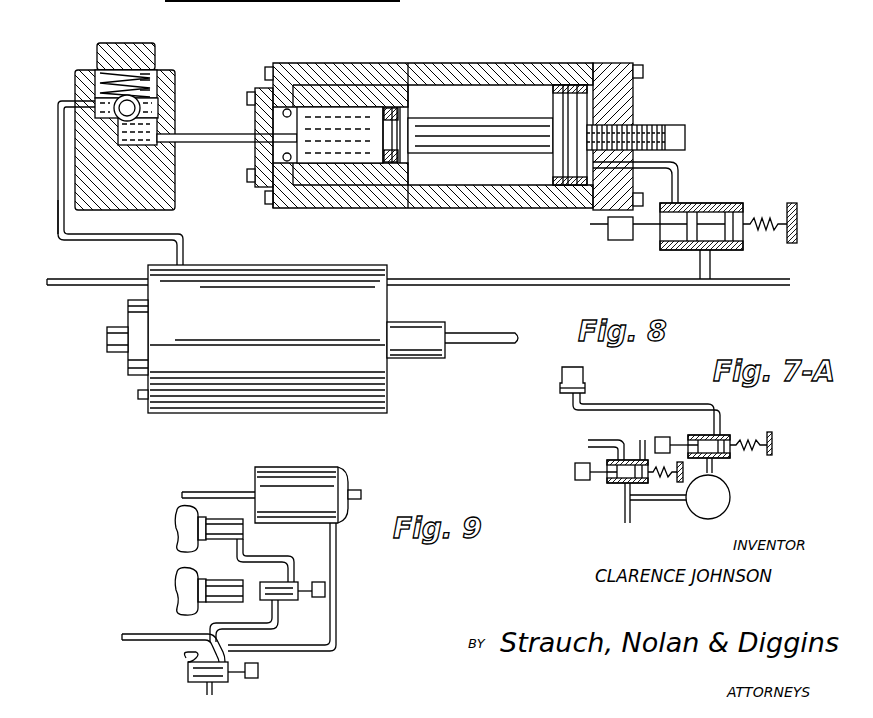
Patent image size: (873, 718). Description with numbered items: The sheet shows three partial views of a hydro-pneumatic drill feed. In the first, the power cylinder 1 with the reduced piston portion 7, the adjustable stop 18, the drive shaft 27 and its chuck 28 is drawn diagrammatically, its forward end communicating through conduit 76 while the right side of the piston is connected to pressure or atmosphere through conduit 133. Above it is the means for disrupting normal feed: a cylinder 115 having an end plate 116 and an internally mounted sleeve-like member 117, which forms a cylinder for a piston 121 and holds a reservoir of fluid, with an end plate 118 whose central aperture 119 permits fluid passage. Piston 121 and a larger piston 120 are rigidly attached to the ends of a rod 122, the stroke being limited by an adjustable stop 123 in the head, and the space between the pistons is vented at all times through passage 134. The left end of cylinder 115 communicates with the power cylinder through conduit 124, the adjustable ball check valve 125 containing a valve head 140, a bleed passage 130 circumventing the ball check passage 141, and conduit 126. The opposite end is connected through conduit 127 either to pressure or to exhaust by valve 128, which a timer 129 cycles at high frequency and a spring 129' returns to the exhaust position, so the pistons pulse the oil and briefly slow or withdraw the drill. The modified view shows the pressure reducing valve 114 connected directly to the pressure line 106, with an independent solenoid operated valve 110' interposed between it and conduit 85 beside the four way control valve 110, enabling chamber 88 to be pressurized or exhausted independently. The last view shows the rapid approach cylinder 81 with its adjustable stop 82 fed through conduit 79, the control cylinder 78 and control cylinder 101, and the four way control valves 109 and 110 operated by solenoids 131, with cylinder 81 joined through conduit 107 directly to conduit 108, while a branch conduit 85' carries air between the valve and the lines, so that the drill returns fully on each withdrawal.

In FIG. 8, the power cylinder 1 is at (390, 302).
In FIG. 8, the reduced portion of power piston 7 is at (432, 360).
In FIG. 8, the adjustable stop 18 is at (138, 394).
In FIG. 8, the drive shaft 27 is at (488, 343).
In FIG. 8, the chuck 28 is at (107, 338).
In FIG. 8, the conduit 76 is at (98, 284).
In FIG. 8, the pressure conduit 133 is at (546, 285).
In FIG. 7A, the pressure conduit 133 is at (588, 442).
In FIG. 9, the pressure conduit 133 is at (183, 658).
In FIG. 8, the conduit 126 is at (108, 240).
In FIG. 8, the conduit 124 is at (225, 130).
In FIG. 8, the adjustable ball check valve 125 is at (155, 62).
In FIG. 8, the bleed passage 130 is at (150, 98).
In FIG. 8, the valve head 140 is at (96, 94).
In FIG. 8, the ball check passage 141 is at (95, 110).
In FIG. 8, the end plate 118 is at (255, 115).
In FIG. 8, the central aperture 119 is at (260, 150).
In FIG. 8, the sleeve-like member 117 is at (278, 208).
In FIG. 8, the piston 121 is at (380, 158).
In FIG. 8, the passage 134 is at (408, 63).
In FIG. 8, the cylinder 115 is at (455, 63).
In FIG. 8, the piston 120 is at (570, 85).
In FIG. 8, the rod 122 is at (453, 118).
In FIG. 8, the end plate 116 is at (636, 108).
In FIG. 8, the adjustable stop 123 is at (678, 125).
In FIG. 8, the conduit 127 is at (682, 180).
In FIG. 8, the valve 128 is at (725, 250).
In FIG. 8, the timer 129 is at (598, 243).
In FIG. 8, the spring 129' is at (770, 205).
In FIG. 7A, the chamber 88 is at (580, 378).
In FIG. 7A, the conduit 85 is at (646, 408).
In FIG. 9, the conduit 85 is at (265, 557).
In FIG. 7A, the four way control valve 110 is at (629, 487).
In FIG. 9, the four way control valve 110 is at (185, 678).
In FIG. 7A, the solenoid operated valve 110' is at (714, 439).
In FIG. 7A, the source of air under pressure 106 is at (630, 518).
In FIG. 9, the source of air under pressure 106 is at (214, 690).
In FIG. 7A, the pressure reducing valve 114 is at (730, 492).
In FIG. 9, the rapid approach cylinder 81 is at (296, 478).
In FIG. 9, the adjustable stop 82 is at (361, 492).
In FIG. 9, the conduit 79 is at (233, 490).
In FIG. 9, the control cylinder 78 is at (177, 518).
In FIG. 9, the control cylinder 101 is at (177, 586).
In FIG. 9, the conduit 108 is at (160, 634).
In FIG. 9, the four way control valve 109 is at (292, 580).
In FIG. 9, the solenoid 131 is at (320, 590).
In FIG. 9, the conduit 85' is at (267, 621).
In FIG. 9, the conduit 107 is at (344, 614).